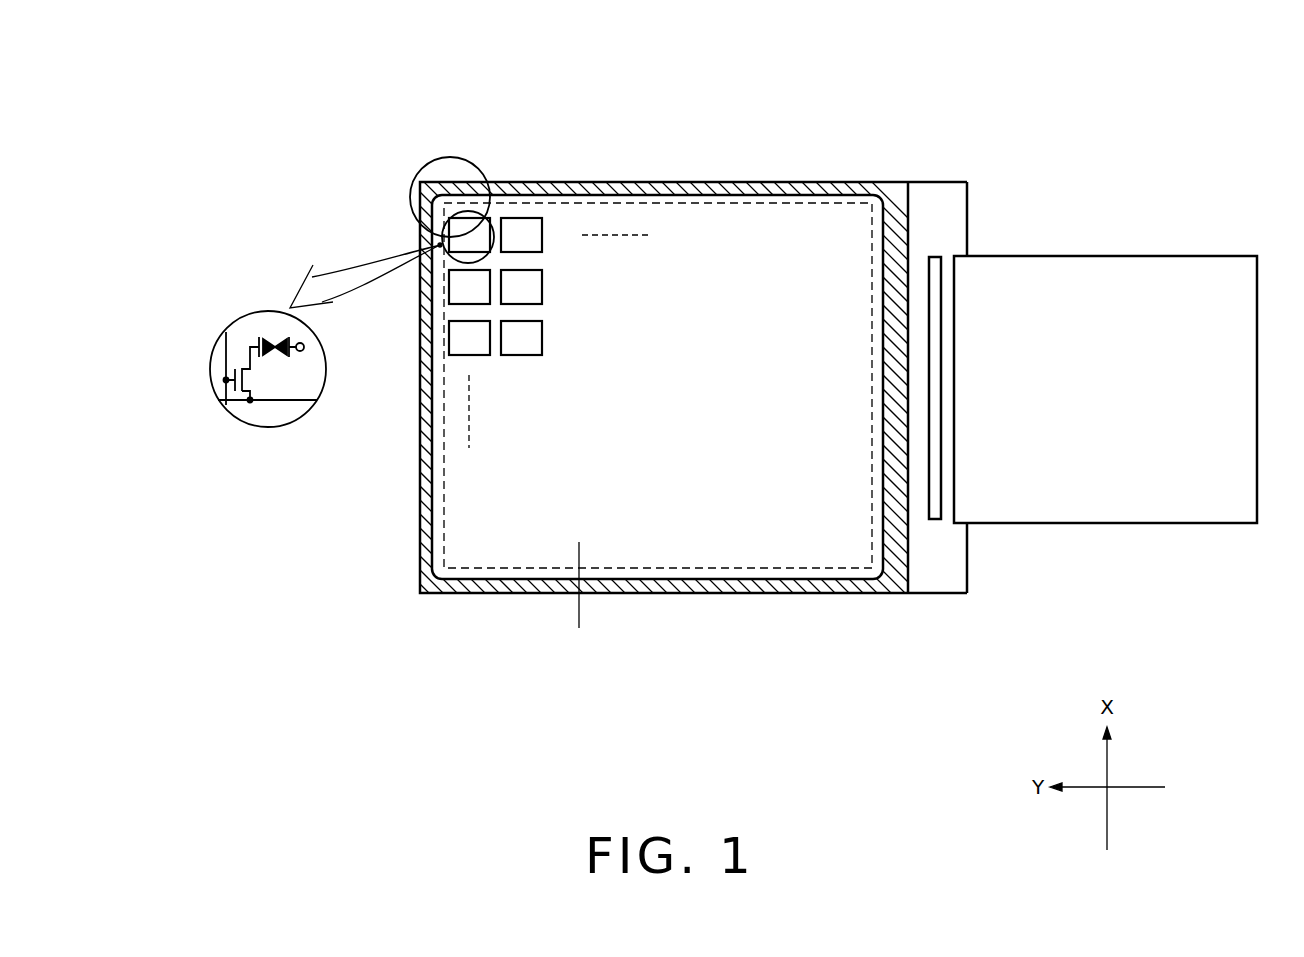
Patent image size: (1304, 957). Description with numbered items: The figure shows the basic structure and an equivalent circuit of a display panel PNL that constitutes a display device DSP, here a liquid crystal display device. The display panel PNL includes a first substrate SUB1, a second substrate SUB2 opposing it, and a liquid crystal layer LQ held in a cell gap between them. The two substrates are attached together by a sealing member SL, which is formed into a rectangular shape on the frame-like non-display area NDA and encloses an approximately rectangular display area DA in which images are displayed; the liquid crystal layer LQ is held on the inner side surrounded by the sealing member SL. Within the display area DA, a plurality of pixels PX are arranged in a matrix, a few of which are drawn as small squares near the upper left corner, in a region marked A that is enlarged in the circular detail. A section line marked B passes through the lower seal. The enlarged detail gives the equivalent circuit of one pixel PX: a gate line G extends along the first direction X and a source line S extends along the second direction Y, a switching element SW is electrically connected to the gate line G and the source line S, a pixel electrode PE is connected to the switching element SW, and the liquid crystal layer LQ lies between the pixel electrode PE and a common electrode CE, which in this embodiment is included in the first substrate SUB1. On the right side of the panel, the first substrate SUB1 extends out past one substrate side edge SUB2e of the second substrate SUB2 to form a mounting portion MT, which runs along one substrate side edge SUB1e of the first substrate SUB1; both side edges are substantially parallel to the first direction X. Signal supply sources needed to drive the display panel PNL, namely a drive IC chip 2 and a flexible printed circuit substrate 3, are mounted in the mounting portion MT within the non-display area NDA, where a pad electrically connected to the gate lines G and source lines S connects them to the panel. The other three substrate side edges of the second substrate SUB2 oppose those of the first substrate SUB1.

The display device DSP is at (1126, 120).
The display panel PNL is at (964, 176).
The first substrate SUB1 is at (930, 580).
The second substrate SUB2 is at (817, 562).
The substrate side edge of the first substrate SUB1e is at (975, 231).
The substrate side edge of the second substrate SUB2e is at (913, 208).
The sealing member SL is at (713, 174).
The display area DA is at (759, 588).
The non-display area NDA is at (650, 413).
The pixel PX is at (476, 212).
The region A / section line A is at (420, 170).
The section line B is at (579, 571).
The drive IC chip 2 is at (935, 257).
The flexible printed circuit (FPC) substrate 3 is at (1185, 256).
The mounting portion MT is at (945, 537).
The gate line G is at (224, 357).
The source line S is at (276, 402).
The switching element SW is at (265, 376).
The pixel electrode PE is at (257, 338).
The common electrode CE is at (304, 349).
The liquid crystal layer LQ is at (273, 337).